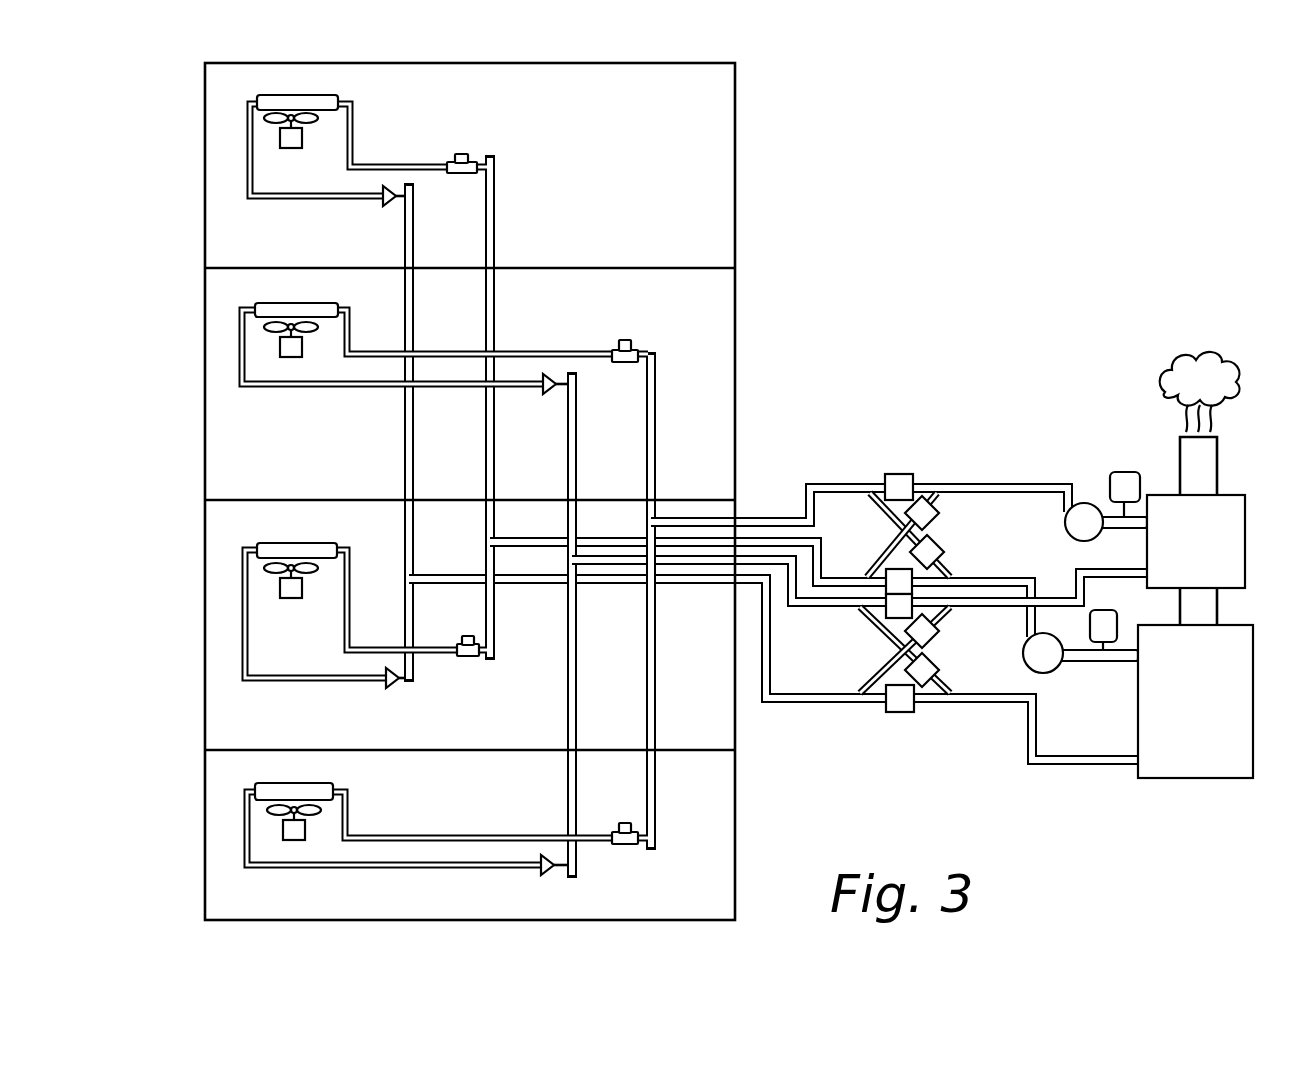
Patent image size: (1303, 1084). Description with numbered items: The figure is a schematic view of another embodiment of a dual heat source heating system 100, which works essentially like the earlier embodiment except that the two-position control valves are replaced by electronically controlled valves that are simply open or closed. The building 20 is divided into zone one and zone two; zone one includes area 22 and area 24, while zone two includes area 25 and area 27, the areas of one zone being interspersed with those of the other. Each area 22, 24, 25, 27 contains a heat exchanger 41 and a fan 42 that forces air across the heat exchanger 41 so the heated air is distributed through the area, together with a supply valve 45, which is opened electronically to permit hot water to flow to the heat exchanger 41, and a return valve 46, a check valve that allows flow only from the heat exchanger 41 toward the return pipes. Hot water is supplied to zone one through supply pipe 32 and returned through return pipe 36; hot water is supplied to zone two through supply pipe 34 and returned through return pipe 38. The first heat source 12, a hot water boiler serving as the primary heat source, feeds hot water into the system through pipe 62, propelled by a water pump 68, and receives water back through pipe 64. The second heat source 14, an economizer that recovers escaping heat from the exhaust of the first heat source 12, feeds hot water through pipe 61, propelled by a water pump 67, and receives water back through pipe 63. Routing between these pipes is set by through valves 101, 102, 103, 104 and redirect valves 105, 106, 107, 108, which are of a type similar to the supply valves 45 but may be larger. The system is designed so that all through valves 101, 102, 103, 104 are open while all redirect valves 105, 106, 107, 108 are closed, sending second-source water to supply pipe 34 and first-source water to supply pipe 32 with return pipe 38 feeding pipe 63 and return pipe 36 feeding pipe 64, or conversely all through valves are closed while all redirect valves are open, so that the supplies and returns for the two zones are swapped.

The first heat source 12 is at (1246, 700).
The second heat source 14 is at (1238, 548).
The building 20 is at (677, 62).
The area 22 is at (212, 216).
The area 24 is at (212, 697).
The area 25 is at (212, 447).
The area 27 is at (212, 894).
The supply pipe 32 is at (498, 203).
The supply pipe 34 is at (656, 440).
The return pipe 36 is at (416, 232).
The return pipe 38 is at (577, 448).
The heat exchanger 41 is at (320, 97).
The fan 42 is at (294, 150).
The supply valve 45 is at (466, 157).
The return valve 46 is at (381, 203).
The pipe 61 is at (985, 483).
The pipe 62 is at (996, 575).
The pipe 63 is at (975, 606).
The pipe 64 is at (1034, 766).
The water pump 67 is at (1094, 503).
The water pump 68 is at (1062, 670).
The dual heat source heating system 100 is at (918, 372).
The through valve 101 is at (899, 472).
The through valve 102 is at (887, 591).
The through valve 103 is at (893, 640).
The through valve 104 is at (905, 713).
The redirect valve 105 is at (941, 510).
The redirect valve 106 is at (938, 547).
The redirect valve 107 is at (936, 641).
The redirect valve 108 is at (937, 668).